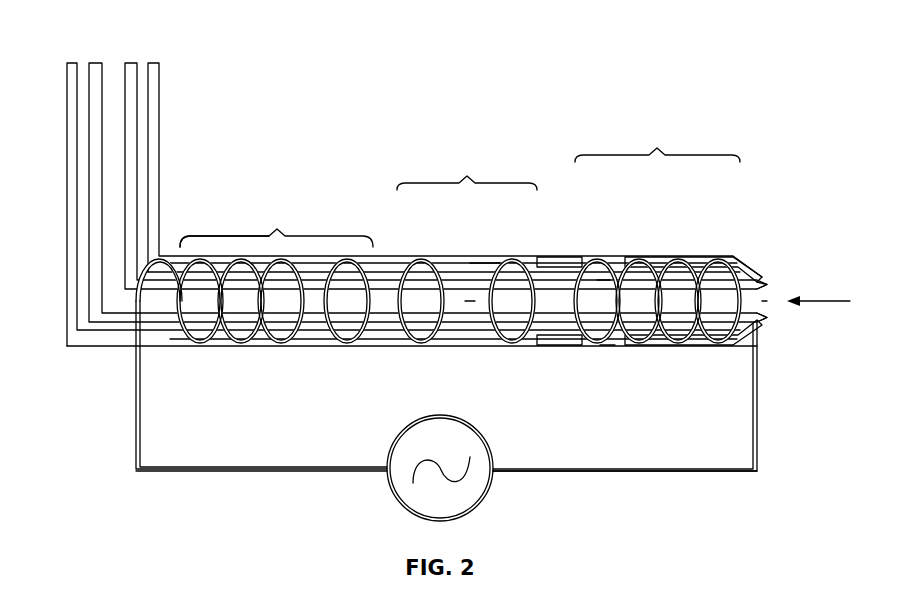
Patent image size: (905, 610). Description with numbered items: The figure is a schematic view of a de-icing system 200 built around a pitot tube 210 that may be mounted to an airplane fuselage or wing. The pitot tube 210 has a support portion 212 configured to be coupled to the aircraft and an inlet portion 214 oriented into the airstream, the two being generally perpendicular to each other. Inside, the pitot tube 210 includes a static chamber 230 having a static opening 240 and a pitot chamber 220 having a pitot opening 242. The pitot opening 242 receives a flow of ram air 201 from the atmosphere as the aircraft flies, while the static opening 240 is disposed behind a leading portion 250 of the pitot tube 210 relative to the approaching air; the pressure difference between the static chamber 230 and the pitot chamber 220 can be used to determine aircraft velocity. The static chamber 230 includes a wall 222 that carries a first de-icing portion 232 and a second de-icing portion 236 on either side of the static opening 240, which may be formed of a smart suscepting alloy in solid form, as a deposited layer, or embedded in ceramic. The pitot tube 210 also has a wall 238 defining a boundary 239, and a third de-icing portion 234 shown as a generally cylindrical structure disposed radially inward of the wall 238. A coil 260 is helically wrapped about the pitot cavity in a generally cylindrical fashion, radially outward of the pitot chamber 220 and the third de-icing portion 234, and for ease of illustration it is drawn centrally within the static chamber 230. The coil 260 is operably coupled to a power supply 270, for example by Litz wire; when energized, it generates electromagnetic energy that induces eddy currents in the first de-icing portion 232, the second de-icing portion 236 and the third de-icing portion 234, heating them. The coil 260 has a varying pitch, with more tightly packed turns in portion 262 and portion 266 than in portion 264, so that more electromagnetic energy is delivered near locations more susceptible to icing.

The de-icing system 200 is at (768, 76).
The flow of ram air 201 is at (822, 300).
The pitot tube 210 is at (66, 225).
The support portion 212 is at (160, 171).
The inlet portion 214 is at (213, 224).
The pitot chamber 220 is at (112, 65).
The wall 222 is at (453, 255).
The static chamber 230 is at (142, 65).
The first de-icing portion 232 is at (565, 256).
The third de-icing portion 234 is at (603, 279).
The second de-icing portion 236 is at (657, 256).
The wall 238 is at (482, 263).
The boundary 239 is at (470, 293).
The static opening 240 is at (607, 351).
The pitot opening 242 is at (753, 301).
The leading portion 250 is at (756, 251).
The coil 260 is at (340, 347).
The portion 262 is at (276, 223).
The portion 264 is at (467, 171).
The portion 266 is at (657, 145).
The power supply 270 is at (493, 448).